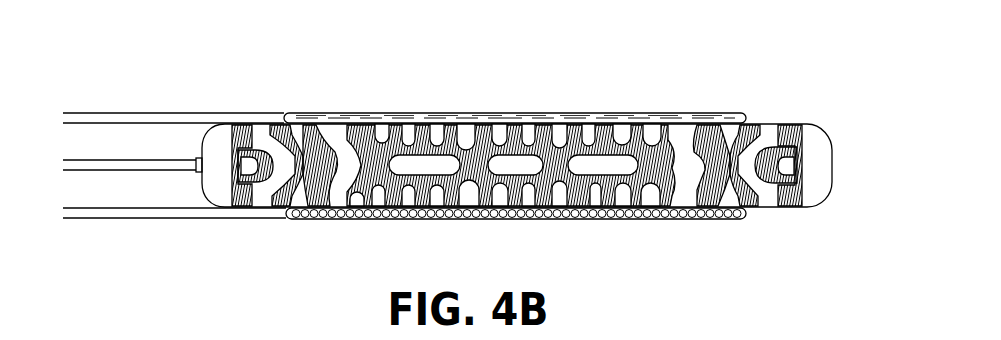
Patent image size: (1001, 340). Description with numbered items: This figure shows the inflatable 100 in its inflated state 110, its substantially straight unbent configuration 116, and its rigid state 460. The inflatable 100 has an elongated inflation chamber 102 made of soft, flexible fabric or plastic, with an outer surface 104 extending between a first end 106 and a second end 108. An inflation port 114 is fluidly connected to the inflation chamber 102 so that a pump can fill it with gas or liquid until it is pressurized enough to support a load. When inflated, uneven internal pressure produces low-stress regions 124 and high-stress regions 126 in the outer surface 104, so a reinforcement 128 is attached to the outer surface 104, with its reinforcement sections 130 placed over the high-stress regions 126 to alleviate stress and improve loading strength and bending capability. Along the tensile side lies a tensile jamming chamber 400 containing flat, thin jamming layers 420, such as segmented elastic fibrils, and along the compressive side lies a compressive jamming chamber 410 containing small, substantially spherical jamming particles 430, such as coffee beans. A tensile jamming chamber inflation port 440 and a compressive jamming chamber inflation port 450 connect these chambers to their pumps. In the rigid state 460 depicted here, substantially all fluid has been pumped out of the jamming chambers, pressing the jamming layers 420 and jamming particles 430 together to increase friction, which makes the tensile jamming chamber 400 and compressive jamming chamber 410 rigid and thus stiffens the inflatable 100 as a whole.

The inflatable 100 is at (207, 132).
The inflation chamber 102 is at (226, 124).
The outer surface 104 is at (256, 124).
The first end 106 is at (212, 200).
The second end 108 is at (833, 158).
The inflated state 110 is at (775, 124).
The inflation port 114 is at (194, 166).
The unbent configuration 116 is at (752, 230).
The low-stress regions 124 is at (690, 196).
The high-stress regions 126 is at (310, 124).
The reinforcement 128 is at (548, 124).
The reinforcement sections 130 is at (793, 209).
The tensile jamming chamber 400 is at (353, 113).
The compressive jamming chamber 410 is at (388, 226).
The jamming layers 420 is at (392, 113).
The jamming particles 430 is at (500, 222).
The tensile jamming chamber inflation port 440 is at (283, 113).
The compressive jamming chamber inflation port 450 is at (283, 222).
The rigid state 460 is at (613, 113).